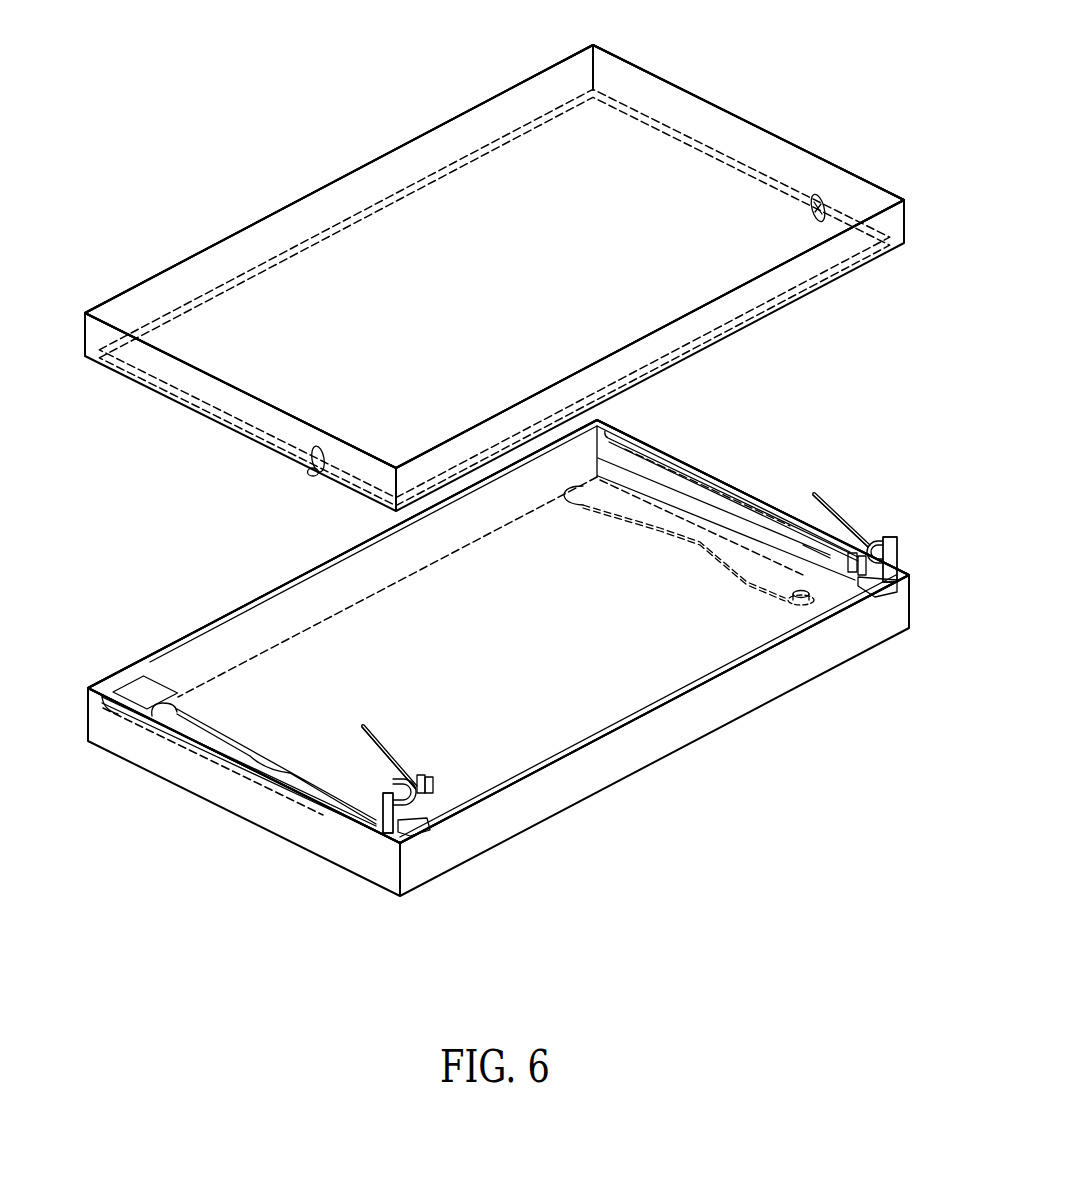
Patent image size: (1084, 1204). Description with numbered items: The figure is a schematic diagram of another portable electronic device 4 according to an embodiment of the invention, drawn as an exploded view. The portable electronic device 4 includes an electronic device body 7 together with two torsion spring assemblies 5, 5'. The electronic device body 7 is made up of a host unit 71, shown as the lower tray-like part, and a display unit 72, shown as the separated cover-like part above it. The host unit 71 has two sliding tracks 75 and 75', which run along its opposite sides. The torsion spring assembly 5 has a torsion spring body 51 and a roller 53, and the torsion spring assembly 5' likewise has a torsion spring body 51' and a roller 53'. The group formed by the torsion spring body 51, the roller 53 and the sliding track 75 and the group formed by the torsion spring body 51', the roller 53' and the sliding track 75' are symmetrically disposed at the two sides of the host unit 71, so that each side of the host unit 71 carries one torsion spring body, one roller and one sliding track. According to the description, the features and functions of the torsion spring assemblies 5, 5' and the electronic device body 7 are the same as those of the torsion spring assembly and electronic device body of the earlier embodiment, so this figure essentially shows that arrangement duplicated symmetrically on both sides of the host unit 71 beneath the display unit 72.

The portable electronic device 4 is at (155, 103).
The electronic device body 7 is at (72, 497).
The host unit 71 is at (185, 630).
The display unit 72 is at (196, 395).
The torsion spring assembly 5 is at (884, 505).
The torsion spring body 51 is at (898, 543).
The roller 53 is at (834, 518).
The sliding track 75 is at (711, 504).
The torsion spring assembly 5' is at (429, 751).
The torsion spring body 51' is at (432, 780).
The roller 53' is at (389, 753).
The sliding track 75' is at (239, 746).